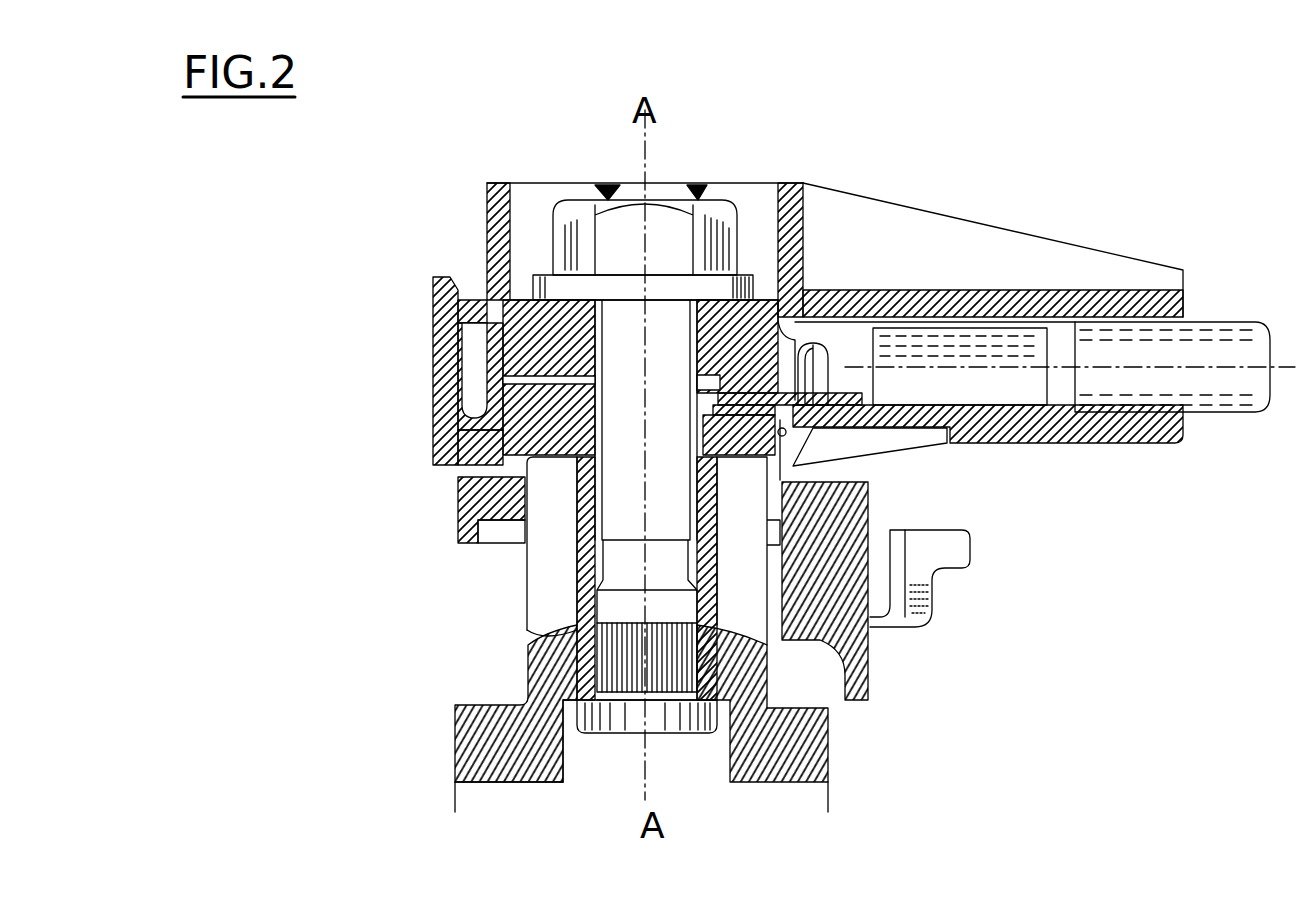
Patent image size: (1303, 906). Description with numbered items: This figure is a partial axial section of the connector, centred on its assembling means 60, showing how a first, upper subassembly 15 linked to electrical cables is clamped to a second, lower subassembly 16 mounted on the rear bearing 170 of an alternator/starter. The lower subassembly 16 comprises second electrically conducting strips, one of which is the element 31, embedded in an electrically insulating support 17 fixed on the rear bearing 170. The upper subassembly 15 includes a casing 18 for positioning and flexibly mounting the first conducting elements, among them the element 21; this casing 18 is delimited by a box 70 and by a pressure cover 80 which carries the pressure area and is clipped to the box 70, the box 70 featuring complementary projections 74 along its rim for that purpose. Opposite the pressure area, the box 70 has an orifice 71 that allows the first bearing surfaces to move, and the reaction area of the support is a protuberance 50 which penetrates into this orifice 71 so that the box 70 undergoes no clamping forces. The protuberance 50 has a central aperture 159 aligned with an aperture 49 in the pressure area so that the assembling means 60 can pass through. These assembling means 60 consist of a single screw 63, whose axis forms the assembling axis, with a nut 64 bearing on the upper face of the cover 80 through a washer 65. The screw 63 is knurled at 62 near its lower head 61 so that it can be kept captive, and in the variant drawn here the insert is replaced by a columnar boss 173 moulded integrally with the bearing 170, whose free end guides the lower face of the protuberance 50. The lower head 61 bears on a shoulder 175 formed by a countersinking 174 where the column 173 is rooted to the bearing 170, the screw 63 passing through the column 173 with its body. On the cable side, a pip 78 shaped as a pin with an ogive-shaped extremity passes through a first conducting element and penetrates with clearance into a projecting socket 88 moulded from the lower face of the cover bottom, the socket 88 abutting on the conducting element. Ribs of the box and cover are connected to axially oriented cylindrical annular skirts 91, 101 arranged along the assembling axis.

The first, upper subassembly 15 is at (876, 187).
The second, lower subassembly 16 is at (445, 497).
The electrically insulating piece forming a support 17 is at (457, 533).
The casing 18 is at (432, 270).
The first electrically conducting element 21 is at (790, 330).
The second electrically conducting element 31 is at (760, 577).
The aperture 49 is at (480, 345).
The protuberance 50 is at (505, 438).
The assembling means 60 is at (703, 190).
The lower head 61 is at (687, 737).
The knurling 62 is at (705, 663).
The screw 63 is at (665, 330).
The nut 64 is at (582, 222).
The washer 65 is at (548, 285).
The box 70 is at (1035, 440).
The orifice 71 is at (808, 443).
The complementary projections 74 is at (433, 300).
The pip 78 is at (830, 348).
The pressure cover 80 is at (1090, 320).
The projecting socket 88 is at (865, 357).
The annular skirt 91 is at (790, 438).
The annular skirt 101 is at (808, 222).
The central aperture 159 is at (560, 388).
The rear bearing 170 is at (495, 737).
The columnar boss 173 is at (585, 562).
The countersinking 174 is at (595, 762).
The shoulder 175 is at (550, 760).